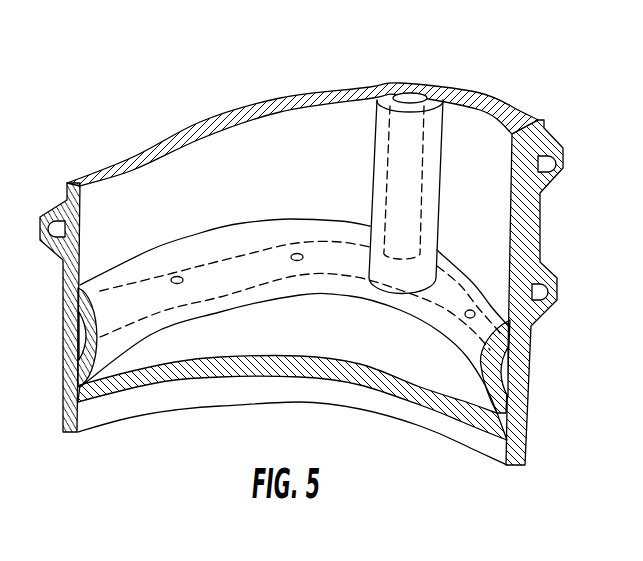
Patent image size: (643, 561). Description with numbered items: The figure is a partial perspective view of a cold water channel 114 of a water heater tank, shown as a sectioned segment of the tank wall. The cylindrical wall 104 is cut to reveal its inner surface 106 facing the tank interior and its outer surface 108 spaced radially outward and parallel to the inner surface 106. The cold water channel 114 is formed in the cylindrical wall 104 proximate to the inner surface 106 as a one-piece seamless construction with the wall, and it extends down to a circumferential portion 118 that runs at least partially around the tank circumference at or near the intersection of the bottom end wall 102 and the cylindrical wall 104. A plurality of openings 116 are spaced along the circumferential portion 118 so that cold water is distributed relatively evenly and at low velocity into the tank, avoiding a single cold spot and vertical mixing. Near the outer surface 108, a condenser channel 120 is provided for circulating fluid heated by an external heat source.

The bottom end wall 102 is at (288, 366).
The cylindrical wall 104 is at (524, 223).
The inner surface 106 is at (137, 222).
The outer surface 108 is at (65, 263).
The cold water channel 114 is at (408, 97).
The openings 116 is at (177, 276).
The circumferential portion 118 is at (243, 238).
The condenser channel 120 is at (50, 212).